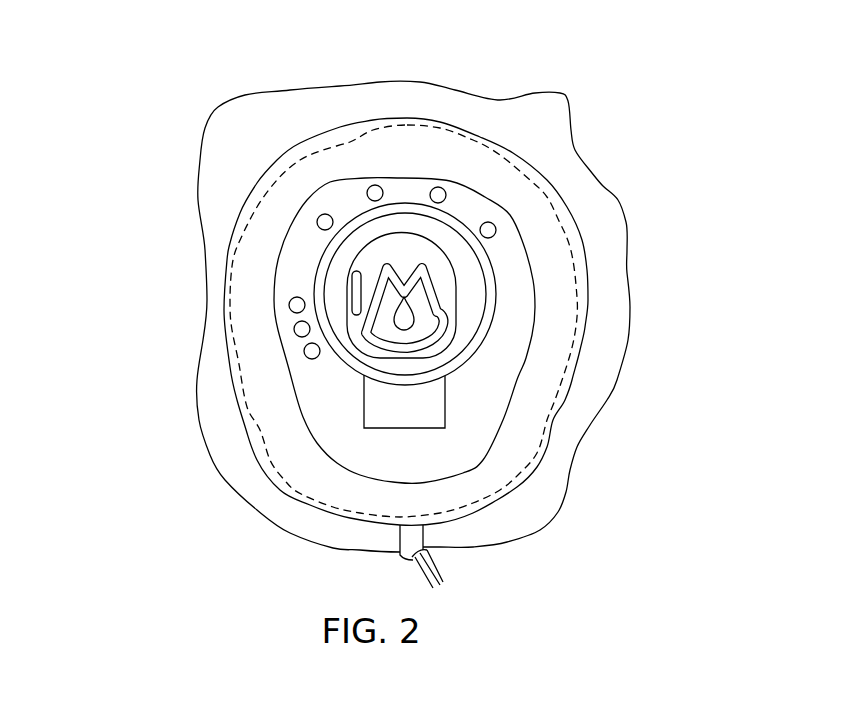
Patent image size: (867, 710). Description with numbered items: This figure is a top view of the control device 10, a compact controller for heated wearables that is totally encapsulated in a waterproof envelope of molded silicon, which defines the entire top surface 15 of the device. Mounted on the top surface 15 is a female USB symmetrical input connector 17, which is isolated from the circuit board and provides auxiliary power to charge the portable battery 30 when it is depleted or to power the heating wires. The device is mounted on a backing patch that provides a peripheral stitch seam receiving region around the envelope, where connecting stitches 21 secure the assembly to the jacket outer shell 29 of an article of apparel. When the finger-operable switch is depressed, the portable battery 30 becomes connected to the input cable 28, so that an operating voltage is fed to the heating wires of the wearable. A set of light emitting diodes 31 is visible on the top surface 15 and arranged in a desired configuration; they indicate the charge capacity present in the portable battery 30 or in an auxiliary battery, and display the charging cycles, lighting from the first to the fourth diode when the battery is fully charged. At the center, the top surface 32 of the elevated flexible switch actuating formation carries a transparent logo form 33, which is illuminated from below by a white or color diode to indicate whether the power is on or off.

The control device 10 is at (446, 132).
The top surface 15 is at (320, 384).
The female USB symmetrical input connector 17 is at (457, 392).
The connecting stitches 21 is at (507, 160).
The power input cable 28 is at (304, 351).
The jacket outer shell 29 is at (603, 192).
The portable battery 30 is at (298, 161).
The light emitting diodes 31 is at (328, 213).
The top surface of the switch actuation formation 32 is at (476, 310).
The transparent logo form 33 is at (376, 279).